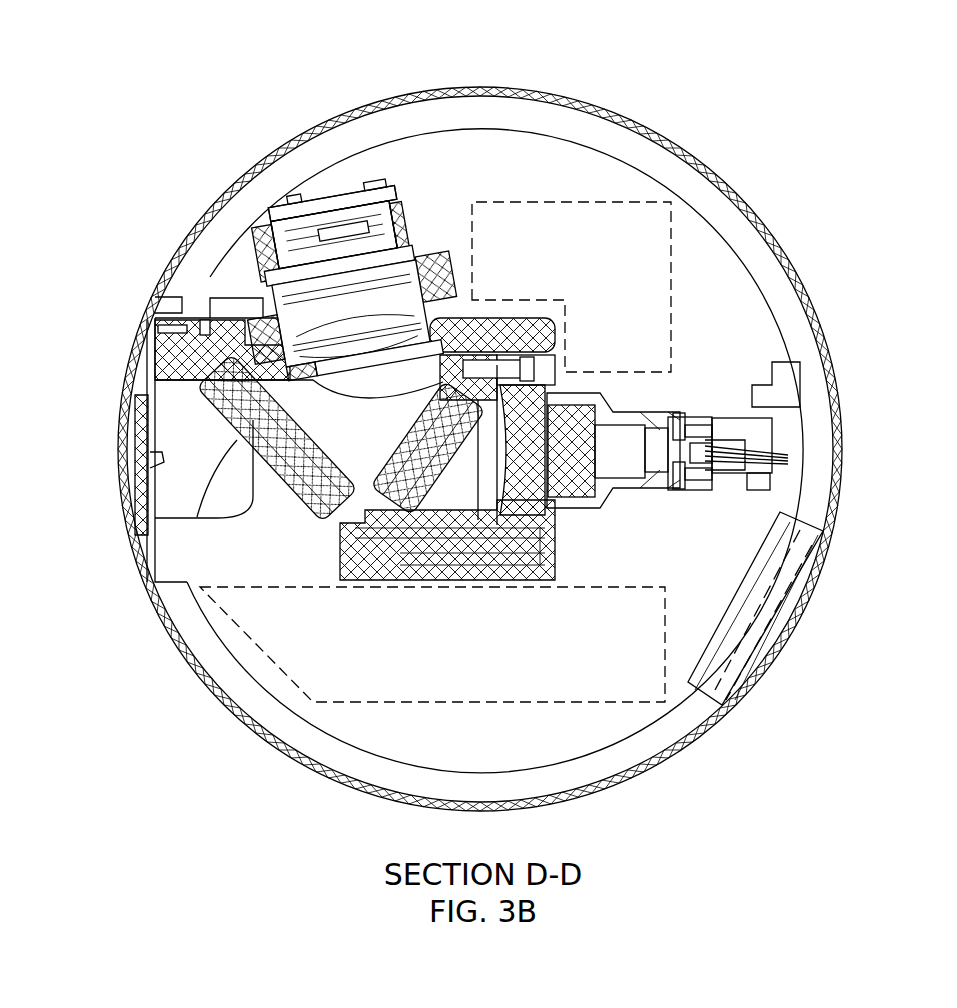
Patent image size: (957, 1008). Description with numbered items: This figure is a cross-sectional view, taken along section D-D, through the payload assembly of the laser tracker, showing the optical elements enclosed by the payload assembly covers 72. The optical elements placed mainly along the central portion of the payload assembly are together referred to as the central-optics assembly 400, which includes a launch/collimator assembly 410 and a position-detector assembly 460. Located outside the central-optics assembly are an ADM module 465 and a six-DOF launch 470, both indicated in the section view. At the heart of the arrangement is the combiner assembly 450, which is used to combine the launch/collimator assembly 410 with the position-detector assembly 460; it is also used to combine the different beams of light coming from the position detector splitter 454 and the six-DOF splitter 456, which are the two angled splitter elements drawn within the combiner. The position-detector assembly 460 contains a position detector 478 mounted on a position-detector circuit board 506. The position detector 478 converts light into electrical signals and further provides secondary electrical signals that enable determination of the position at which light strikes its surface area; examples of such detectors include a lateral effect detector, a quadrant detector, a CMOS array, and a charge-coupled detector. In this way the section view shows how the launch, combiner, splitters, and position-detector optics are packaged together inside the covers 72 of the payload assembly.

The payload assembly covers 72 is at (690, 157).
The central-optics assembly 400 is at (796, 437).
The launch/collimator assembly 410 is at (666, 392).
The combiner assembly 450 is at (361, 598).
The position detector splitter 454 is at (322, 490).
The six-DOF splitter 456 is at (238, 440).
The position-detector assembly 460 is at (423, 226).
The ADM module 465 is at (572, 178).
The six-DOF launch 470 is at (549, 721).
The position detector 478 is at (310, 207).
The position-detector circuit board 506 is at (358, 192).